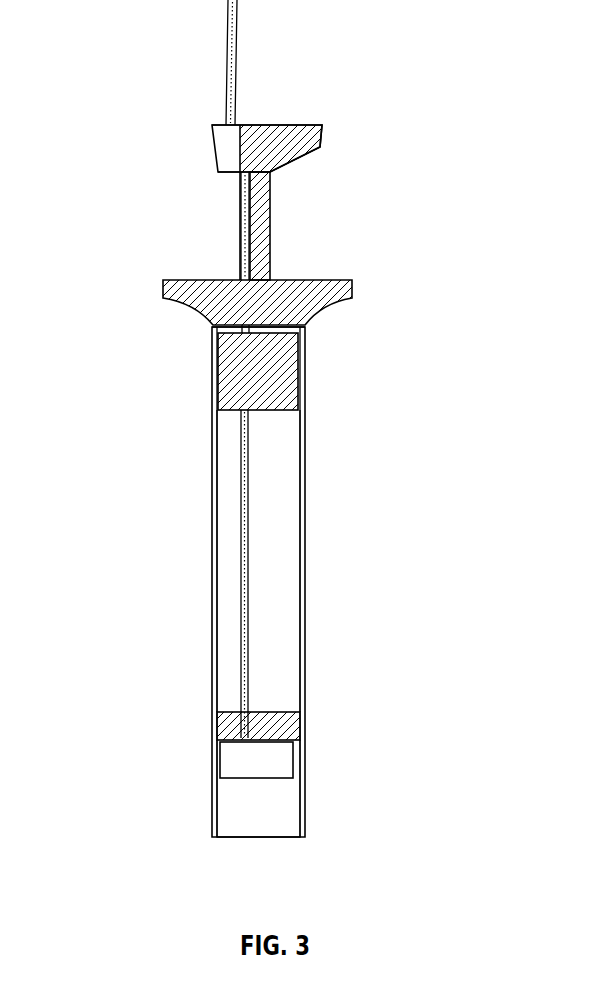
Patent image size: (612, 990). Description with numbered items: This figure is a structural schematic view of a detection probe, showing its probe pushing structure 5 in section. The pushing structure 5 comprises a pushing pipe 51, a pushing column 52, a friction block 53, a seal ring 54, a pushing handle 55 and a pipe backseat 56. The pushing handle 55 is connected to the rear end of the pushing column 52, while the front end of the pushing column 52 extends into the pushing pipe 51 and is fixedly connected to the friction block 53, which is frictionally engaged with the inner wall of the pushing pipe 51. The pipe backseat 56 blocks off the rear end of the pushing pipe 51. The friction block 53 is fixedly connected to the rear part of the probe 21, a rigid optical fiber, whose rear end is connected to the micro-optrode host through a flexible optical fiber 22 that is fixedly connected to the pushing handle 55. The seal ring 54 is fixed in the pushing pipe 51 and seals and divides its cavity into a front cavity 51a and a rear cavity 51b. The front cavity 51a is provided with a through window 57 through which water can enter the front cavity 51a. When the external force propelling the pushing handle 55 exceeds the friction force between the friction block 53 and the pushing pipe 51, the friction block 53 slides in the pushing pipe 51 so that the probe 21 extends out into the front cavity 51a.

The probe pushing structure 5 is at (245, 418).
The probe 21 is at (242, 583).
The flexible optical fiber 22 is at (222, 98).
The pushing pipe 51 is at (302, 553).
The front cavity 51a is at (268, 628).
The rear cavity 51b is at (258, 820).
The pushing column 52 is at (272, 205).
The friction block 53 is at (275, 402).
The seal ring 54 is at (288, 712).
The pushing handle 55 is at (283, 127).
The pipe backseat 56 is at (167, 280).
The through window 57 is at (240, 763).